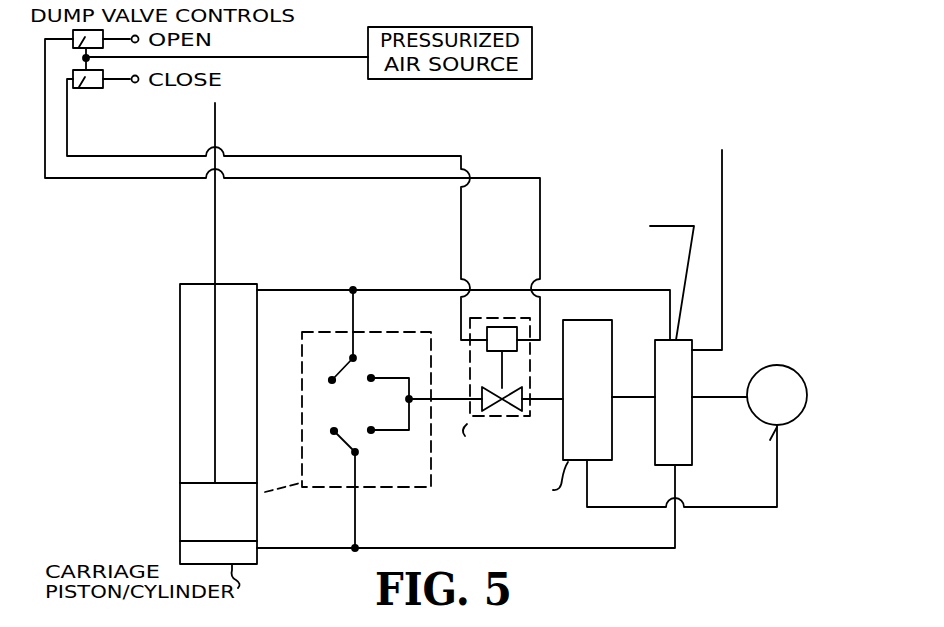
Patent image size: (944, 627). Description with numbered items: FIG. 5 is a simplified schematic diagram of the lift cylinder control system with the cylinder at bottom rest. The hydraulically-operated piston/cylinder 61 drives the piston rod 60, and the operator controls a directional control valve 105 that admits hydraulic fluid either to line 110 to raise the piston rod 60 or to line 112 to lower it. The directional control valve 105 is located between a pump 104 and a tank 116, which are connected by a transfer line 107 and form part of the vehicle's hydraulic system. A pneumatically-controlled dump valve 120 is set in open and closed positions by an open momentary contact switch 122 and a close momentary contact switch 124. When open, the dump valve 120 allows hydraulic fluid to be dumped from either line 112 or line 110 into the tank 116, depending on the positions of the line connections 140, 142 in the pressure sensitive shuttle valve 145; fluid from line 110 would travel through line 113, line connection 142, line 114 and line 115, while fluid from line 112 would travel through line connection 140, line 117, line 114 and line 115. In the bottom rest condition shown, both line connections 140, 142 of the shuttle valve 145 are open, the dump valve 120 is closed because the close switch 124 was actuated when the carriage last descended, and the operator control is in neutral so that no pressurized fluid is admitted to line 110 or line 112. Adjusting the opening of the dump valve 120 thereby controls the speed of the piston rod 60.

The piston rod 60 is at (215, 243).
The piston/cylinder 61 is at (180, 460).
The pump 104 is at (783, 365).
The directional control valve 105 is at (686, 465).
The transfer line 107 is at (712, 507).
The line 110 is at (571, 546).
The line 112 is at (634, 289).
The line 113 is at (354, 504).
The line 114 is at (436, 398).
The line 115 is at (538, 397).
The tank 116 is at (600, 462).
The line 117 is at (353, 309).
The dump valve 120 is at (524, 318).
The open momentary contact switch 122 is at (80, 50).
The close momentary contact switch 124 is at (92, 88).
The line connection 140 is at (350, 360).
The line connection 142 is at (348, 448).
The pressure sensitive shuttle valve 145 is at (361, 332).